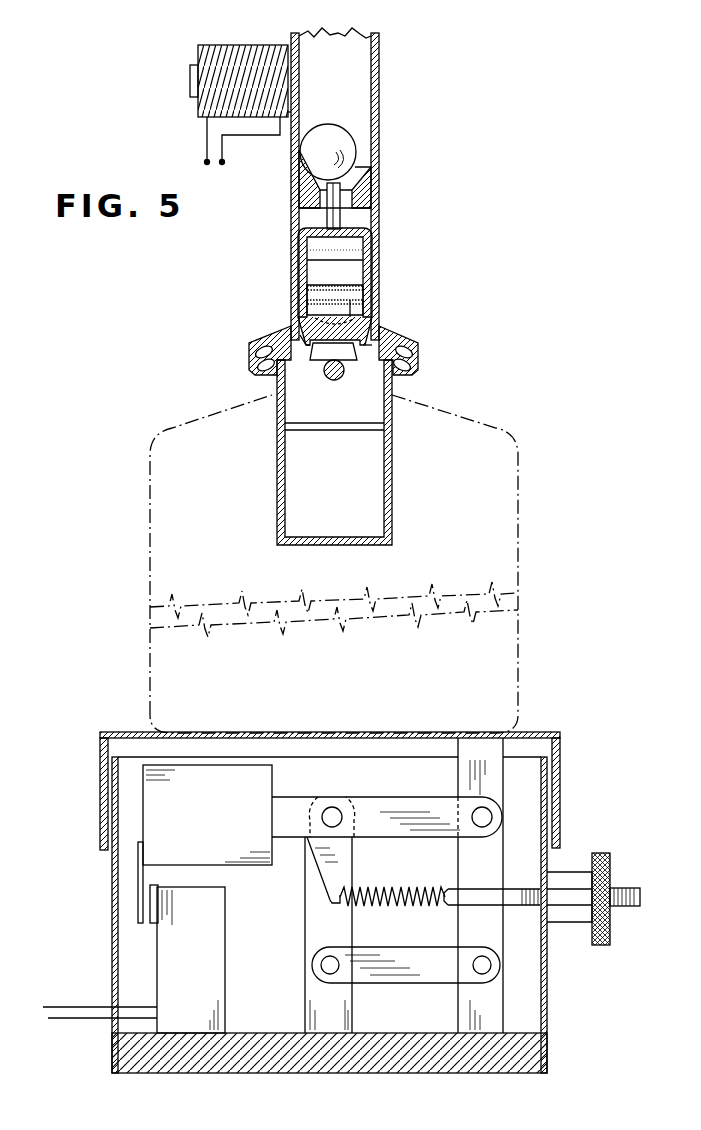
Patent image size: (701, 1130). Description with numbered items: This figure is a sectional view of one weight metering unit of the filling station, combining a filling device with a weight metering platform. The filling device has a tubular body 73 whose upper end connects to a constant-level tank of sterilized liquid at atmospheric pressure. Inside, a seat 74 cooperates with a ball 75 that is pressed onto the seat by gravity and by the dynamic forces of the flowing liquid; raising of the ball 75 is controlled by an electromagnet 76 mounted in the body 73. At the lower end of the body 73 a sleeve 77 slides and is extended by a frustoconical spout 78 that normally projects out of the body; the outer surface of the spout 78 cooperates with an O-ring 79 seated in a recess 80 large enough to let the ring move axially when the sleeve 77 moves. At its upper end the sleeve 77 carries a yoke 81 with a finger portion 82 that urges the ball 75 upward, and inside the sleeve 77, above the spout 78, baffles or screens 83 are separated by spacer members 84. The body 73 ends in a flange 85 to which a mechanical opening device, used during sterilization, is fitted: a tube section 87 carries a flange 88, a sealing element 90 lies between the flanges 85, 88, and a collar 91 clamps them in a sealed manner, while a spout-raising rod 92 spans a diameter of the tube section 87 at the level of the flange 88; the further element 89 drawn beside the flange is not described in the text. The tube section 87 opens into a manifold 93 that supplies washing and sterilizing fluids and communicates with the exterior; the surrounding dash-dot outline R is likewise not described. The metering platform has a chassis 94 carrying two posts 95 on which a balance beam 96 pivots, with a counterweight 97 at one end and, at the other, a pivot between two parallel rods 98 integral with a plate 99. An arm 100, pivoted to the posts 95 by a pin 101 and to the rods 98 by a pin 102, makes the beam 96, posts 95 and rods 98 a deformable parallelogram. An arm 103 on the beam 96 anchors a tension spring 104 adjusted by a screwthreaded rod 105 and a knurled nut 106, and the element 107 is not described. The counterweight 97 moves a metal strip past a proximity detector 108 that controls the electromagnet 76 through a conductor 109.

The tubular body 73 is at (379, 118).
The seat 74 is at (368, 188).
The ball 75 is at (324, 142).
The electromagnet 76 is at (262, 78).
The sleeve 77 is at (298, 256).
The spout 78 is at (320, 362).
The O-ring 79 is at (384, 332).
The recess 80 is at (302, 338).
The yoke 81 is at (373, 255).
The finger portion 82 is at (340, 216).
The baffles or screens 83 is at (312, 281).
The spacer members 84 is at (307, 302).
The flange 85 is at (412, 343).
The tube section 87 is at (273, 405).
The flange 88 is at (252, 360).
The seal ring 89 is at (418, 372).
The sealing element 90 is at (414, 354).
The collar 91 is at (256, 346).
The spout-raising rod 92 is at (338, 380).
The manifold 93 is at (277, 478).
The chassis 94 is at (255, 1052).
The posts 95 is at (322, 1013).
The balance beam 96 is at (375, 812).
The counterweight 97 is at (207, 815).
The parallel rods 98 is at (464, 778).
The plate 99 is at (338, 732).
The arm 100 is at (416, 983).
The pin 101 is at (328, 962).
The pin 102 is at (482, 974).
The arm 103 is at (340, 890).
The tension spring 104 is at (400, 893).
The screwthreaded rod 105 is at (525, 888).
The knurled nut 106 is at (600, 853).
The bar 107 is at (138, 915).
The proximity detector 108 is at (191, 960).
The conductor 109 is at (64, 1006).
The reservoir R is at (142, 505).